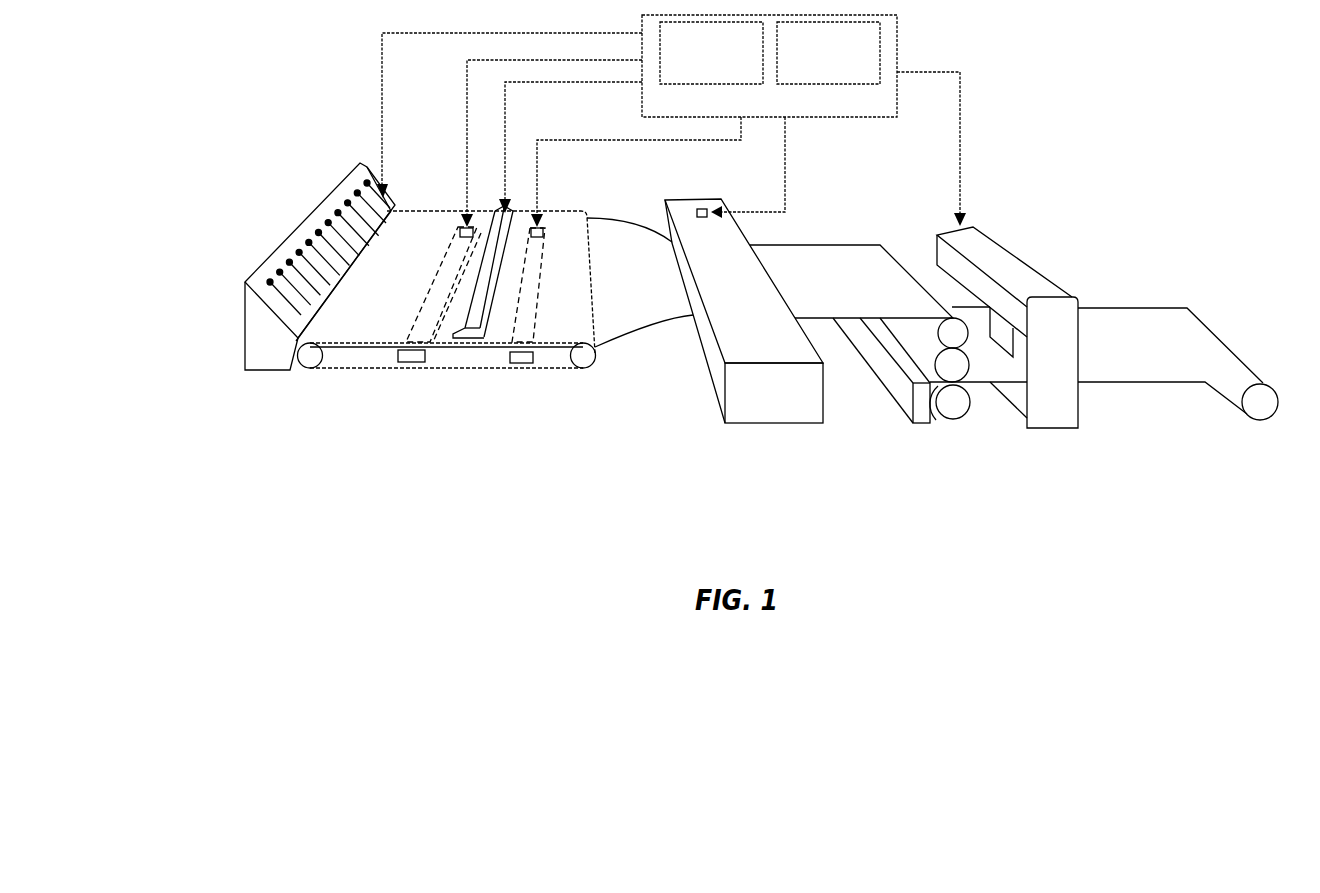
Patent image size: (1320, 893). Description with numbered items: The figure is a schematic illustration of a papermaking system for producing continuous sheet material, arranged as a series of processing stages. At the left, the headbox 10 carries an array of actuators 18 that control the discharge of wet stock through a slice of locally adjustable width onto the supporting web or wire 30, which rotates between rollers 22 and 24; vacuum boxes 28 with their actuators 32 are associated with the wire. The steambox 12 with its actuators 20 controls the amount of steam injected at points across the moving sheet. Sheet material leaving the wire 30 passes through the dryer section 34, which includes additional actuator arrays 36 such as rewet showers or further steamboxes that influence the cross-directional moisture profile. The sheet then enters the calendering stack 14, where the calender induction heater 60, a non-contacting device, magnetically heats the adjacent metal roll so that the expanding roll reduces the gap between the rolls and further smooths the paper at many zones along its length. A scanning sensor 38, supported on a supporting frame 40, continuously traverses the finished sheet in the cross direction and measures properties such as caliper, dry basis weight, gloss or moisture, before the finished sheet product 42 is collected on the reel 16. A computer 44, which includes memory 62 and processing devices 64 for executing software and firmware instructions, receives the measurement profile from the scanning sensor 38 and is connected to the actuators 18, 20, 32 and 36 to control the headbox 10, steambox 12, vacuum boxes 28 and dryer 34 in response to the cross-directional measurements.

The headbox 10 is at (265, 338).
The steambox 12 is at (472, 340).
The calendering stack 14 is at (943, 428).
The reel 16 is at (1265, 413).
The array of actuators 18 is at (364, 181).
The actuators 20 is at (503, 210).
The roller 22 is at (305, 363).
The roller 24 is at (583, 360).
The vacuum boxes 28 is at (415, 358).
The supporting web or wire 30 is at (453, 348).
The actuators 32 is at (540, 225).
The dryer section 34 is at (748, 414).
The actuator arrays 36 is at (699, 208).
The scanning sensor 38 is at (1000, 333).
The supporting frame 40 is at (1065, 410).
The finished sheet product 42 is at (1173, 318).
The computer 44 is at (878, 112).
The calender induction heater 60 is at (899, 385).
The memory 62 is at (727, 76).
The processing devices 64 is at (877, 76).